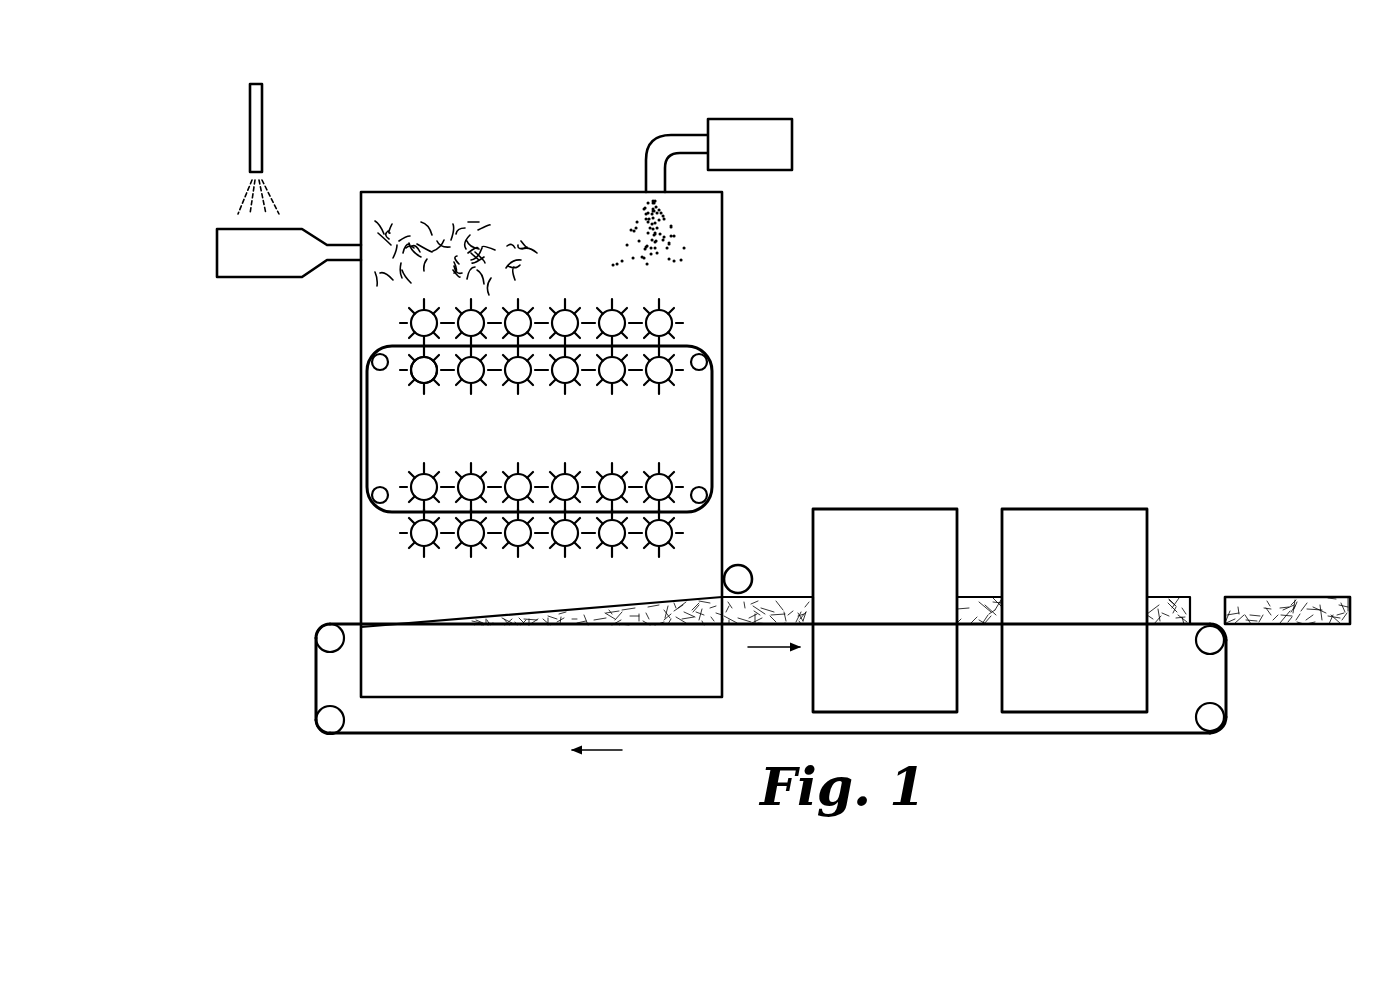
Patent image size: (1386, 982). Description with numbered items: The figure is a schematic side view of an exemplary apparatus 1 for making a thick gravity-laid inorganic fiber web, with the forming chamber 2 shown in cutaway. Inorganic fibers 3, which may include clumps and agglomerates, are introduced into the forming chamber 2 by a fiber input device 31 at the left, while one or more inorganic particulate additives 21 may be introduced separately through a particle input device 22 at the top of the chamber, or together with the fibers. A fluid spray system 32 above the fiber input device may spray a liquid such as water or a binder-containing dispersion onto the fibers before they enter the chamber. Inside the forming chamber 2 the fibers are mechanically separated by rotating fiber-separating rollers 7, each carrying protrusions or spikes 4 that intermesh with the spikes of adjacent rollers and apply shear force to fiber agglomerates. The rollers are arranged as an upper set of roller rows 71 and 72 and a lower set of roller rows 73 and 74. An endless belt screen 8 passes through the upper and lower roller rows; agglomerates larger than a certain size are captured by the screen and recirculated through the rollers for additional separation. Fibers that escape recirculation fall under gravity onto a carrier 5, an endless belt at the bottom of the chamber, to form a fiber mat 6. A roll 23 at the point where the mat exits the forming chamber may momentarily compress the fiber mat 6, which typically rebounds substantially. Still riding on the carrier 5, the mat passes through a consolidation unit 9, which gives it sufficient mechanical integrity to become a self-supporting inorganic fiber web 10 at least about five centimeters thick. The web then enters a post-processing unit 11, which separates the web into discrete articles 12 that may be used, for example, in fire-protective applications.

The apparatus 1 is at (950, 106).
The forming chamber 2 is at (790, 258).
The inorganic fibers 3 is at (440, 208).
The protrusions (spikes) 4 is at (431, 388).
The carrier 5 is at (316, 658).
The fiber mat 6 is at (793, 592).
The fiber-separating rollers 7 is at (410, 380).
The endless belt screen 8 is at (368, 458).
The consolidation unit 9 is at (884, 524).
The inorganic fiber web 10 is at (970, 600).
The post-processing unit 11 is at (1058, 524).
The discrete articles 12 is at (1313, 552).
The inorganic particulate additive 21 is at (665, 228).
The particle input device 22 is at (666, 145).
The roll 23 is at (732, 580).
The fiber input device 31 is at (232, 254).
The fluid spray system 32 is at (253, 122).
The upper roller row 71 is at (680, 318).
The upper roller row 72 is at (542, 398).
The lower roller row 73 is at (681, 477).
The lower roller row 74 is at (682, 532).